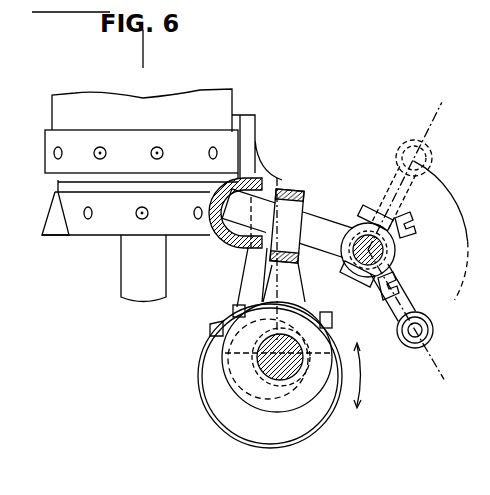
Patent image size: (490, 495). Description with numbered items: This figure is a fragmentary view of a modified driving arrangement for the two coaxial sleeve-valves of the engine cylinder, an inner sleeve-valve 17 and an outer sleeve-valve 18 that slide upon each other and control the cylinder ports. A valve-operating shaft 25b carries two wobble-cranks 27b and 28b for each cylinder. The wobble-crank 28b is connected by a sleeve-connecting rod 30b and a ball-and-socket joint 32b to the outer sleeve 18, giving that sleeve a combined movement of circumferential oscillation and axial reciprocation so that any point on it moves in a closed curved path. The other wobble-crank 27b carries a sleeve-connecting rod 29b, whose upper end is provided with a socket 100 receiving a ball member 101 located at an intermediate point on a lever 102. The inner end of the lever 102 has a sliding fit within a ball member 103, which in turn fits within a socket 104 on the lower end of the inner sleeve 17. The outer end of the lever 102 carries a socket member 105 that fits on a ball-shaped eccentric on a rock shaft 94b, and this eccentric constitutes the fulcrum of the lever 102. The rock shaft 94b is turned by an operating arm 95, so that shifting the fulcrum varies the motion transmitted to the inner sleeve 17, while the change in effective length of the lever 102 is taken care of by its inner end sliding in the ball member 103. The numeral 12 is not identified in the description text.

The outer sleeve-valve 18 is at (233, 96).
The ball-and-socket joint 32b is at (256, 136).
The inner sleeve-valve 17 is at (58, 184).
The support leg 12 is at (126, 268).
The socket 104 is at (216, 240).
The socket 100 is at (300, 205).
The ball member 103 is at (272, 181).
The ball member 101 is at (308, 216).
The lever 102 is at (329, 225).
The rock shaft 94b is at (350, 226).
The socket member 105 is at (399, 260).
The operating arm 95 is at (418, 240).
The sleeve-connecting rod 30b is at (243, 290).
The sleeve-connecting rod 29b is at (292, 288).
The valve-operating shaft 25b is at (290, 402).
The wobble-crank 27b is at (335, 372).
The wobble-crank 28b is at (250, 395).